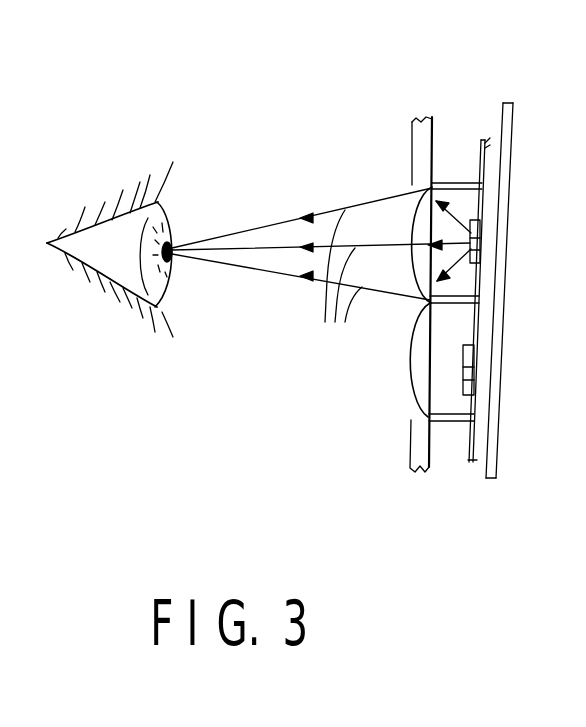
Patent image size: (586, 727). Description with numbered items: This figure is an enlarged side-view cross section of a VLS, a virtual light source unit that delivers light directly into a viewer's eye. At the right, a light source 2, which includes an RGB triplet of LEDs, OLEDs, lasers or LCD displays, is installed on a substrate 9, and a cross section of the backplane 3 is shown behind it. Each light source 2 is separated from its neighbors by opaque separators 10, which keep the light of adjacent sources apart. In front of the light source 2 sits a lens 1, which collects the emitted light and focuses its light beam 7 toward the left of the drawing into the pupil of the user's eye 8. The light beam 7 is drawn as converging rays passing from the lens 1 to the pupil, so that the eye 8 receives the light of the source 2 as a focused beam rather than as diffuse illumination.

The lens 1 is at (410, 228).
The light source 2 is at (481, 243).
The backplane 3 is at (481, 243).
The light beam 7 is at (321, 279).
The user's eye 8 is at (175, 265).
The substrate 9 is at (488, 172).
The opaque separators 10 is at (457, 176).